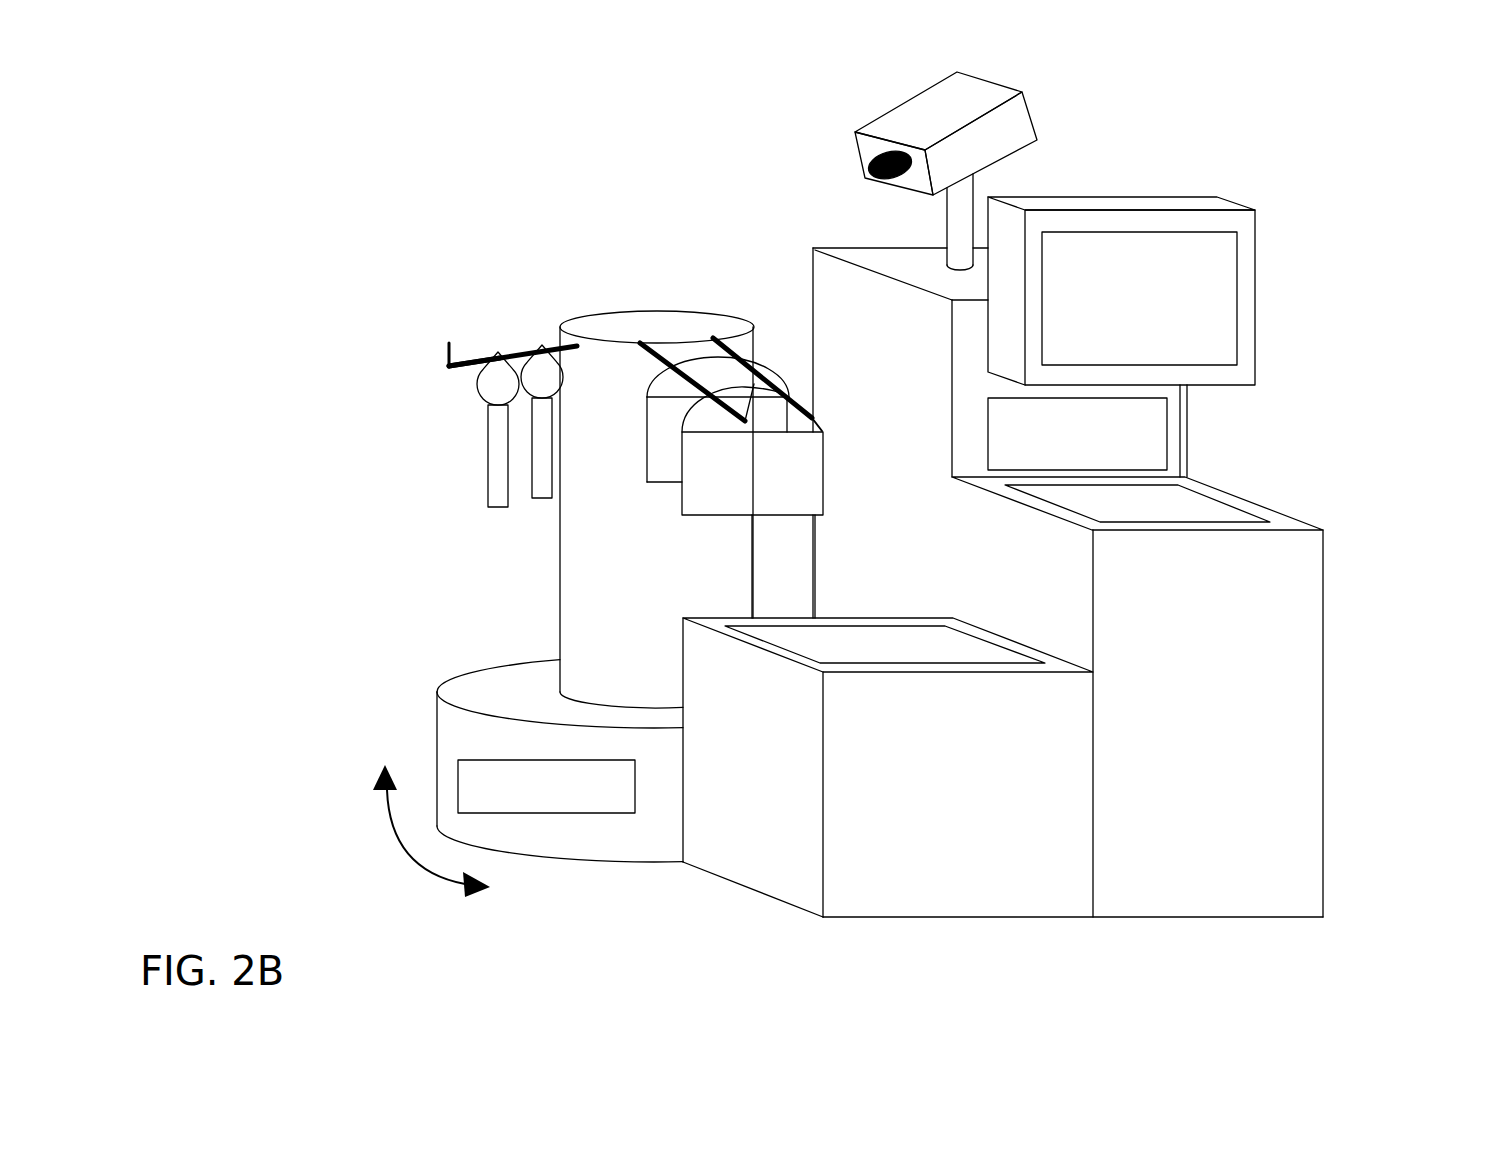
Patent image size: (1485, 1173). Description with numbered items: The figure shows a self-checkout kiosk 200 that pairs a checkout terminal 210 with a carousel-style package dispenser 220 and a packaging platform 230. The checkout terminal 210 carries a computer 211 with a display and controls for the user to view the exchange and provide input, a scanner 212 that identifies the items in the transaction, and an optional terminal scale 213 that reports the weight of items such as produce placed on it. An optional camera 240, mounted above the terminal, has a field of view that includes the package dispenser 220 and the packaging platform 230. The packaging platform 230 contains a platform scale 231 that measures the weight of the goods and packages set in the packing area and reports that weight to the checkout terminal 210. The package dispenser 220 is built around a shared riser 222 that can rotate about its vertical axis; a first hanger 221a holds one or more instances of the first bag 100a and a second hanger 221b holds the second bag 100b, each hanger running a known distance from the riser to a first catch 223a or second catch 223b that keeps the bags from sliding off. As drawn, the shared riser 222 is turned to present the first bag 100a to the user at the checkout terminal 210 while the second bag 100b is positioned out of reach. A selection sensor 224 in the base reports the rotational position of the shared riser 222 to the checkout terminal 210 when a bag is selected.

The self-checkout kiosk 200 is at (243, 140).
The package dispenser 220 is at (550, 264).
The shared riser 222 is at (657, 330).
The selection sensor 224 is at (478, 758).
The second catch 223b is at (448, 345).
The second hanger 221b is at (449, 368).
The first hanger 221a is at (657, 362).
The first catch 223a is at (808, 388).
The first bag 100a is at (700, 486).
The second bag 100b is at (497, 470).
The camera 240 is at (1033, 117).
The checkout terminal 210 is at (1307, 832).
The computer 211 is at (1253, 303).
The scanner 212 is at (1147, 443).
The terminal scale 213 is at (1203, 497).
The packaging platform 230 is at (765, 833).
The platform scale 231 is at (867, 643).